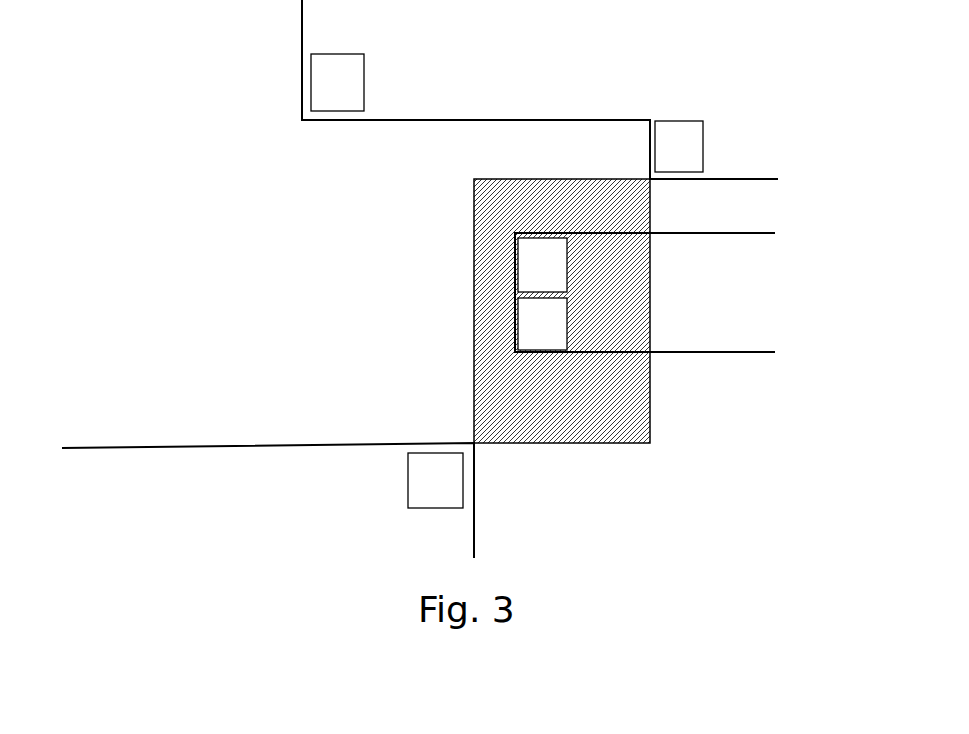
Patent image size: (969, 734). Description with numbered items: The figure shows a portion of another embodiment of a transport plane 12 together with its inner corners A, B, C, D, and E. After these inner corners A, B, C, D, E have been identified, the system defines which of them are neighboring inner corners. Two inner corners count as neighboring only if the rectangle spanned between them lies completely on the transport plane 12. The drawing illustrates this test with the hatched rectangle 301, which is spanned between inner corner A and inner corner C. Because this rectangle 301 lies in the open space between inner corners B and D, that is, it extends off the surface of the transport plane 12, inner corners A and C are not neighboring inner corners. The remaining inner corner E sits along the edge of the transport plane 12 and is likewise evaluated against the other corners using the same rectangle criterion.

The rectangle 301 is at (593, 410).
The transport plane 12 is at (268, 411).
The inner corner A is at (435, 480).
The inner corner B is at (542, 324).
The inner corner C is at (679, 146).
The inner corner D is at (542, 265).
The inner corner E is at (337, 82).